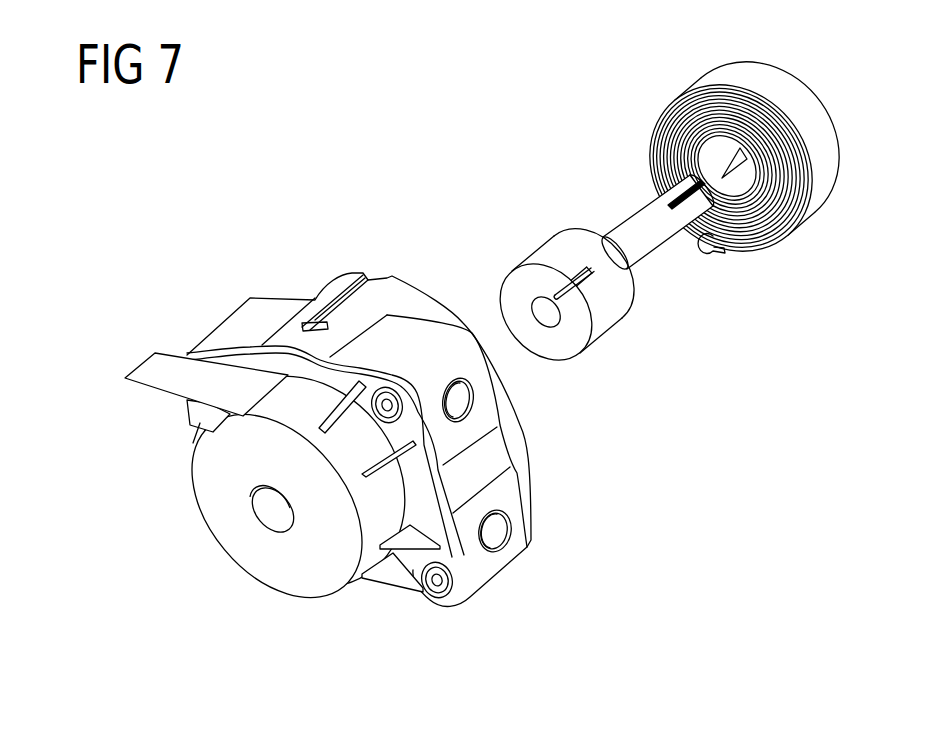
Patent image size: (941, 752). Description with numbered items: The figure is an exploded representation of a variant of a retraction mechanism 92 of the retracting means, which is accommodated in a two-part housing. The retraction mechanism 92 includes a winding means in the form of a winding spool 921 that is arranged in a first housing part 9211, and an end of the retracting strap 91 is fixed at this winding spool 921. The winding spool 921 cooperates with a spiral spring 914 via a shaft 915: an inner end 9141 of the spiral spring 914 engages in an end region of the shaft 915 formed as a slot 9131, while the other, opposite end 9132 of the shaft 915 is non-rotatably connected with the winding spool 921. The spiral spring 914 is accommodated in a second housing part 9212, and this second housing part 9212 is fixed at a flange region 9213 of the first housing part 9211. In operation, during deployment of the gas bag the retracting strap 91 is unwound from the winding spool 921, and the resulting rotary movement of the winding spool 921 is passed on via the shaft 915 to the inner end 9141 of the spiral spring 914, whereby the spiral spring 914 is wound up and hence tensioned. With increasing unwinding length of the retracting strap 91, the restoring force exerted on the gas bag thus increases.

The retracting strap 91 is at (165, 377).
The retraction mechanism 92 is at (258, 225).
The spiral spring 914 is at (825, 198).
The inner end of the spiral spring 9141 is at (723, 163).
The shaft 915 is at (642, 222).
The slot 9131 is at (700, 237).
The opposite end of the shaft 9132 is at (612, 257).
The winding spool 921 is at (605, 330).
The first housing part 9211 is at (238, 525).
The second housing part 9212 is at (400, 297).
The flange region 9213 is at (430, 523).